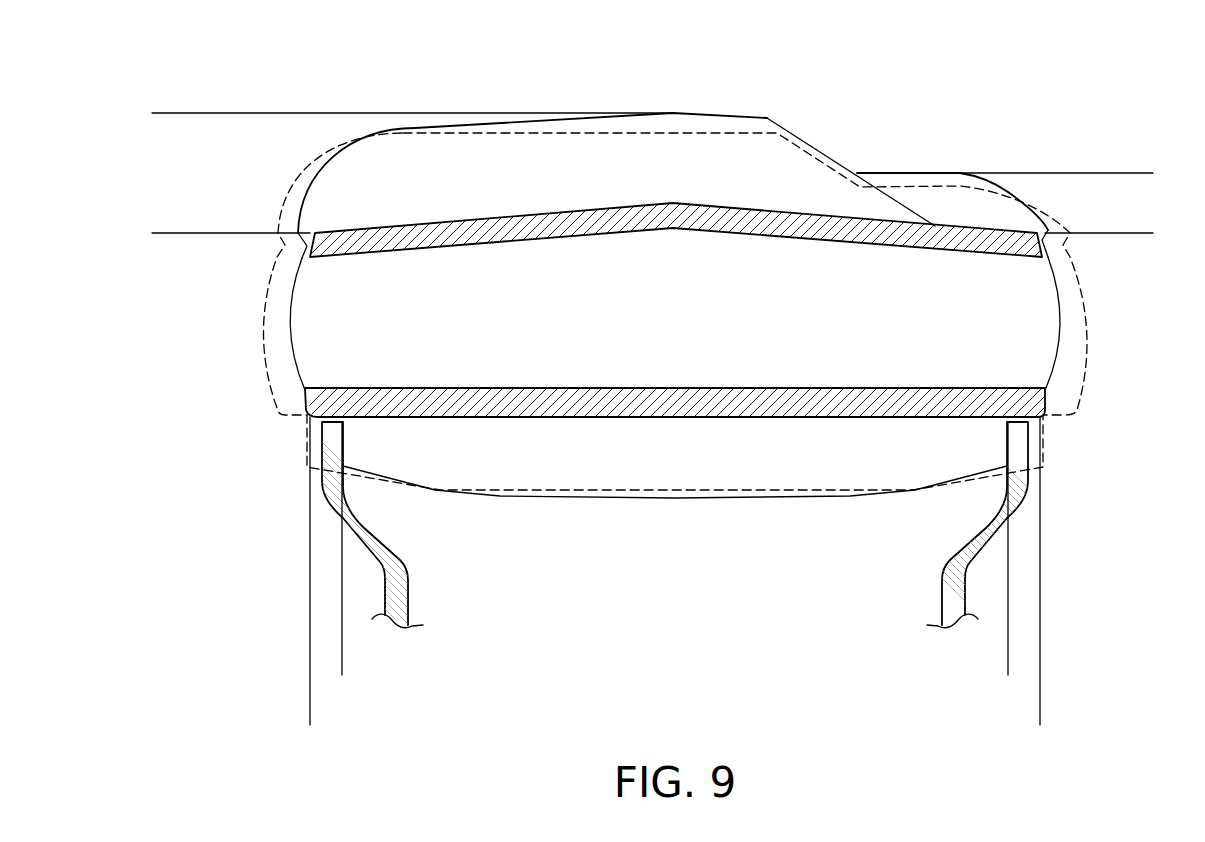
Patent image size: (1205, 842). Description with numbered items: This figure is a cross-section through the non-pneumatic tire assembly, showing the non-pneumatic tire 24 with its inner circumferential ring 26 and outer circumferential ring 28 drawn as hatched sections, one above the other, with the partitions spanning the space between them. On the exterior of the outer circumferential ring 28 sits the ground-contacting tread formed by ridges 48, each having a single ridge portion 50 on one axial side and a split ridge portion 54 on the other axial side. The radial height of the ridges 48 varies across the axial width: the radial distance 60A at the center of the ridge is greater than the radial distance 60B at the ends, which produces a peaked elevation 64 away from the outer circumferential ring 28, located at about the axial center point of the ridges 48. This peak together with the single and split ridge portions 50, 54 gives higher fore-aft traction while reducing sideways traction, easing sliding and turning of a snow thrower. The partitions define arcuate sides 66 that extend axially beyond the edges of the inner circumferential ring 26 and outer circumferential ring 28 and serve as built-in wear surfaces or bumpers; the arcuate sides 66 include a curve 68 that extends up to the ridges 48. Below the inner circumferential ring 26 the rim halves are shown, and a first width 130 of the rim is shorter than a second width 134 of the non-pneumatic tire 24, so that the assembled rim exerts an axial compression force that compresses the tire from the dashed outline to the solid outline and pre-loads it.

The peaked elevation 64 is at (735, 110).
The split ridge portion 54 is at (470, 125).
The ridges 48 is at (625, 115).
The non-pneumatic tire 24 is at (927, 173).
The single ridge portion 50 is at (972, 185).
The curve 68 is at (1027, 200).
The outer circumferential ring 28 is at (563, 238).
The inner circumferential ring 26 is at (550, 418).
The arcuate sides 66 is at (288, 323).
The radial distance at center of ridge 60A is at (152, 113).
The radial distance at ends of ridge 60B is at (1153, 140).
The first width 130 is at (1008, 668).
The second width 134 is at (1040, 718).